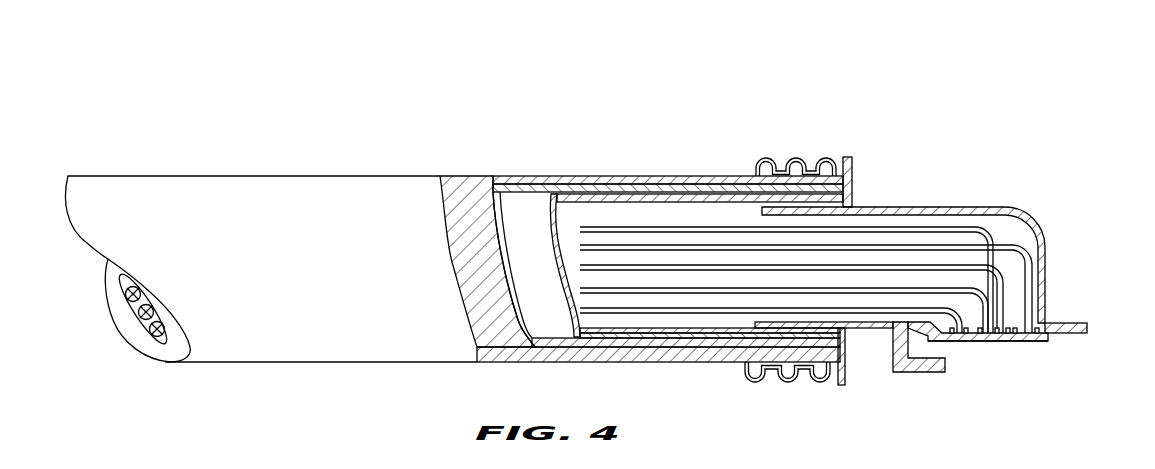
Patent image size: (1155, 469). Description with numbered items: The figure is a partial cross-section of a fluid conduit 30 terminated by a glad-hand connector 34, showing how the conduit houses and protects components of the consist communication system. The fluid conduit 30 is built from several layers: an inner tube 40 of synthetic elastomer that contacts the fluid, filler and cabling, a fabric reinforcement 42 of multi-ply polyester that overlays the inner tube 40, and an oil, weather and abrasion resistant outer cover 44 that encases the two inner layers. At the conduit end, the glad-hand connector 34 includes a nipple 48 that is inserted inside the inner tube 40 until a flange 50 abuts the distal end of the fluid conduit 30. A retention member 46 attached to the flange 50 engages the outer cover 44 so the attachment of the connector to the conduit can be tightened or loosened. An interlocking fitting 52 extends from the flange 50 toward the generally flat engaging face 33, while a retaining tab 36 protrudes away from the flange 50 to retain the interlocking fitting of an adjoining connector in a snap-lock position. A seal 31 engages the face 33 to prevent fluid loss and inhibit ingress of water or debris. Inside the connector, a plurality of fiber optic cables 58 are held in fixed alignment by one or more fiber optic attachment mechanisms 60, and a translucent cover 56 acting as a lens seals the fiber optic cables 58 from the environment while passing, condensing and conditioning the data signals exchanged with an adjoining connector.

The fluid conduit 30 is at (246, 142).
The seal 31 is at (1043, 342).
The engaging face 33 is at (973, 342).
The glad-hand connector 34 is at (1022, 147).
The retaining tab 36 is at (1059, 348).
The inner tube 40 is at (533, 208).
The fabric reinforcement 42 is at (463, 193).
The outer cover 44 is at (393, 198).
The retention member 46 is at (791, 389).
The nipple 48 is at (773, 219).
The flange 50 is at (868, 191).
The interlocking fitting 52 is at (919, 377).
The cover 56 is at (1012, 356).
The fiber optic cables 58 is at (990, 236).
The fiber optic attachment mechanism 60 is at (1020, 330).